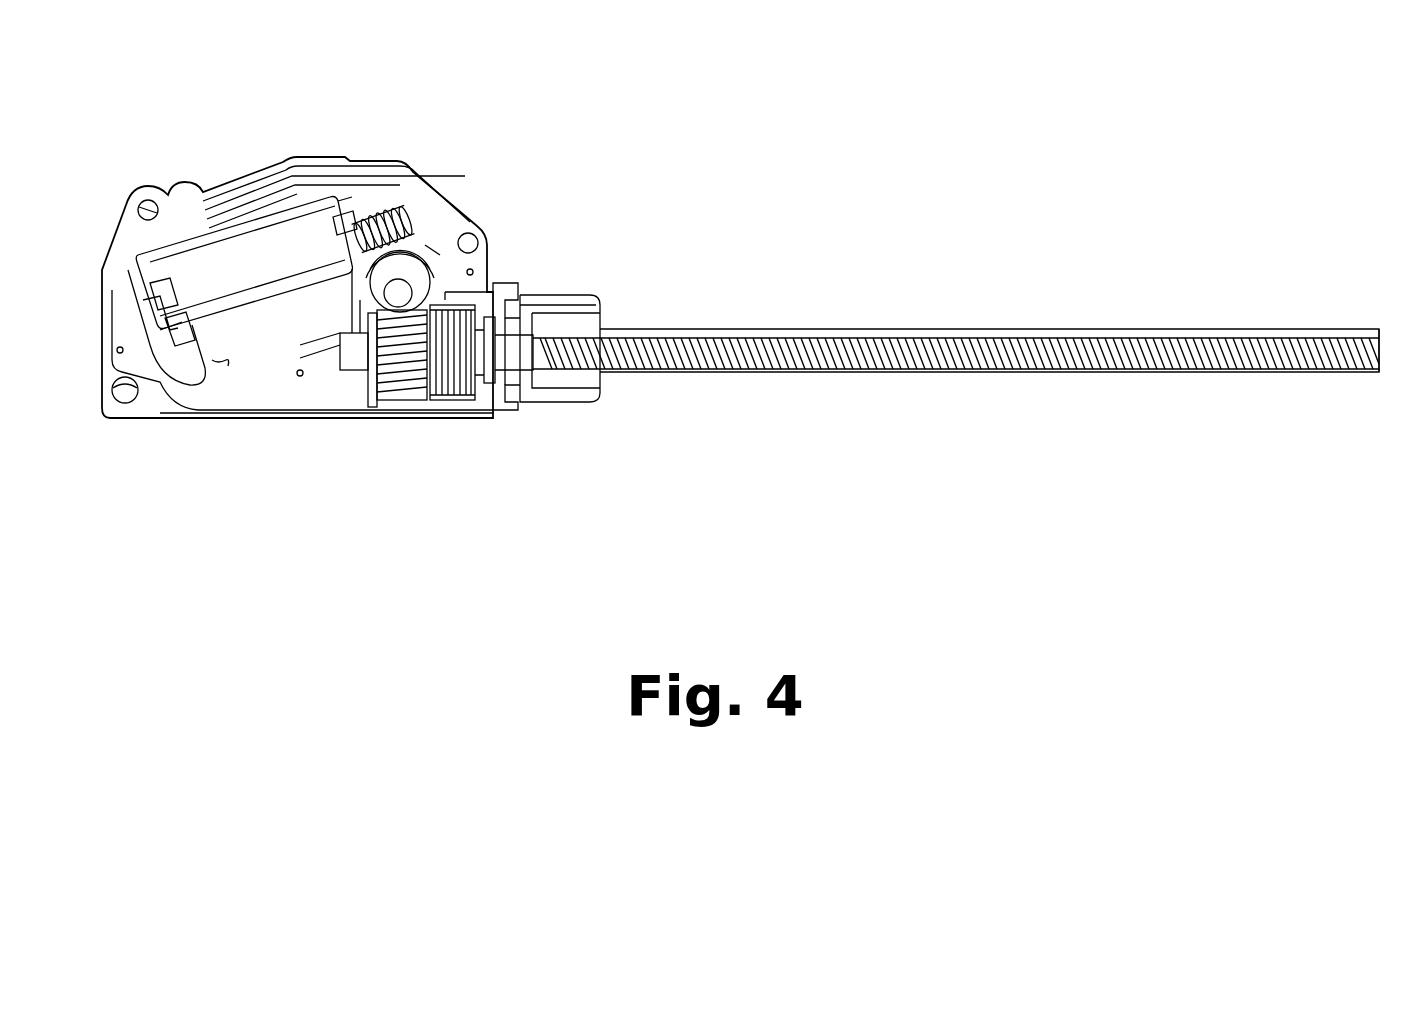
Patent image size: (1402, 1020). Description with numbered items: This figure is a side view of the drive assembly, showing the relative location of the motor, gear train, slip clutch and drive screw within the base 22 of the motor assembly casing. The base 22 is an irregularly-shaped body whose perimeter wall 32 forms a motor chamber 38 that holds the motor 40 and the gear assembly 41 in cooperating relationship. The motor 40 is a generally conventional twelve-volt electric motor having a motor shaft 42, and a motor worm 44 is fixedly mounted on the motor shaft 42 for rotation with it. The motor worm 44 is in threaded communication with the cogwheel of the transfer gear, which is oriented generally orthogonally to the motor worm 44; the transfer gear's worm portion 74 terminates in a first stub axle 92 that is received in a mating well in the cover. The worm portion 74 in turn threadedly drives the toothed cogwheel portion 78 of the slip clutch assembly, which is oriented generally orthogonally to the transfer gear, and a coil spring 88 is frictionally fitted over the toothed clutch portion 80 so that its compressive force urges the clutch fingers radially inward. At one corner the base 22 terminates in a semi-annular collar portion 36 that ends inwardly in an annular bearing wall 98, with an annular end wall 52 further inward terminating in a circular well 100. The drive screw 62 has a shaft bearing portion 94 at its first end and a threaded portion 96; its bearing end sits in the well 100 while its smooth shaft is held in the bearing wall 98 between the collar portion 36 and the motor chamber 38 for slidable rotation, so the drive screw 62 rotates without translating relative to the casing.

The base 22 is at (106, 403).
The perimeter wall 32 is at (237, 190).
The collar portion 36 is at (570, 307).
The motor chamber 38 is at (230, 365).
The motor 40 is at (213, 278).
The gear assembly 41 is at (432, 250).
The motor shaft 42 is at (343, 240).
The motor worm 44 is at (382, 220).
The end wall 52 is at (362, 397).
The drive screw 62 is at (815, 342).
The worm portion 74 is at (401, 250).
The cogwheel portion 78 is at (404, 400).
The clutch portion 80 is at (478, 385).
The coil spring 88 is at (460, 313).
The first stub axle 92 is at (398, 290).
The shaft bearing portion 94 is at (355, 362).
The threaded portion 96 is at (1138, 368).
The bearing wall 98 is at (513, 377).
The well 100 is at (340, 342).